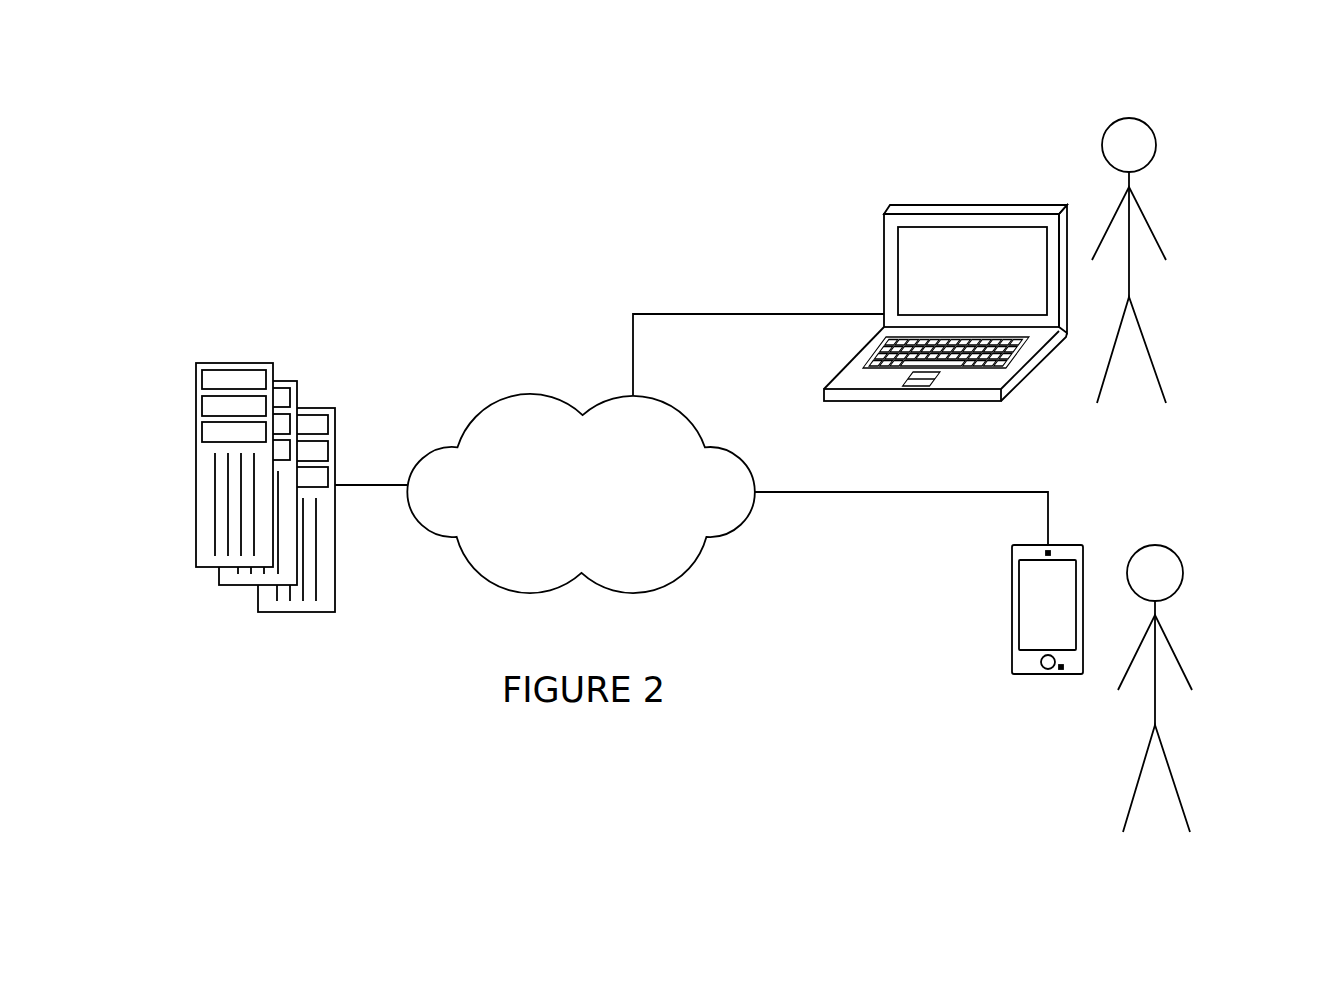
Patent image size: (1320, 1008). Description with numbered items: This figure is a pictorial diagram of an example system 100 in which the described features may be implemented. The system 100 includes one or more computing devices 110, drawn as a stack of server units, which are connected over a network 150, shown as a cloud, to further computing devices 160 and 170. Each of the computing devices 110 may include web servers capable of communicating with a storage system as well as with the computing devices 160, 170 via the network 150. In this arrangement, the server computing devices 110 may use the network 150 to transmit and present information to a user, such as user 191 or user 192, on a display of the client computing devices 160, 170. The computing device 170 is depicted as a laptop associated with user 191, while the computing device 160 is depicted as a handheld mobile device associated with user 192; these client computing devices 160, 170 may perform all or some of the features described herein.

The system 100 is at (265, 75).
The computing devices 110 is at (222, 363).
The network 150 is at (529, 395).
The computing device 160 is at (1012, 569).
The computing device 170 is at (884, 249).
The user 191 is at (1155, 204).
The user 192 is at (1182, 618).